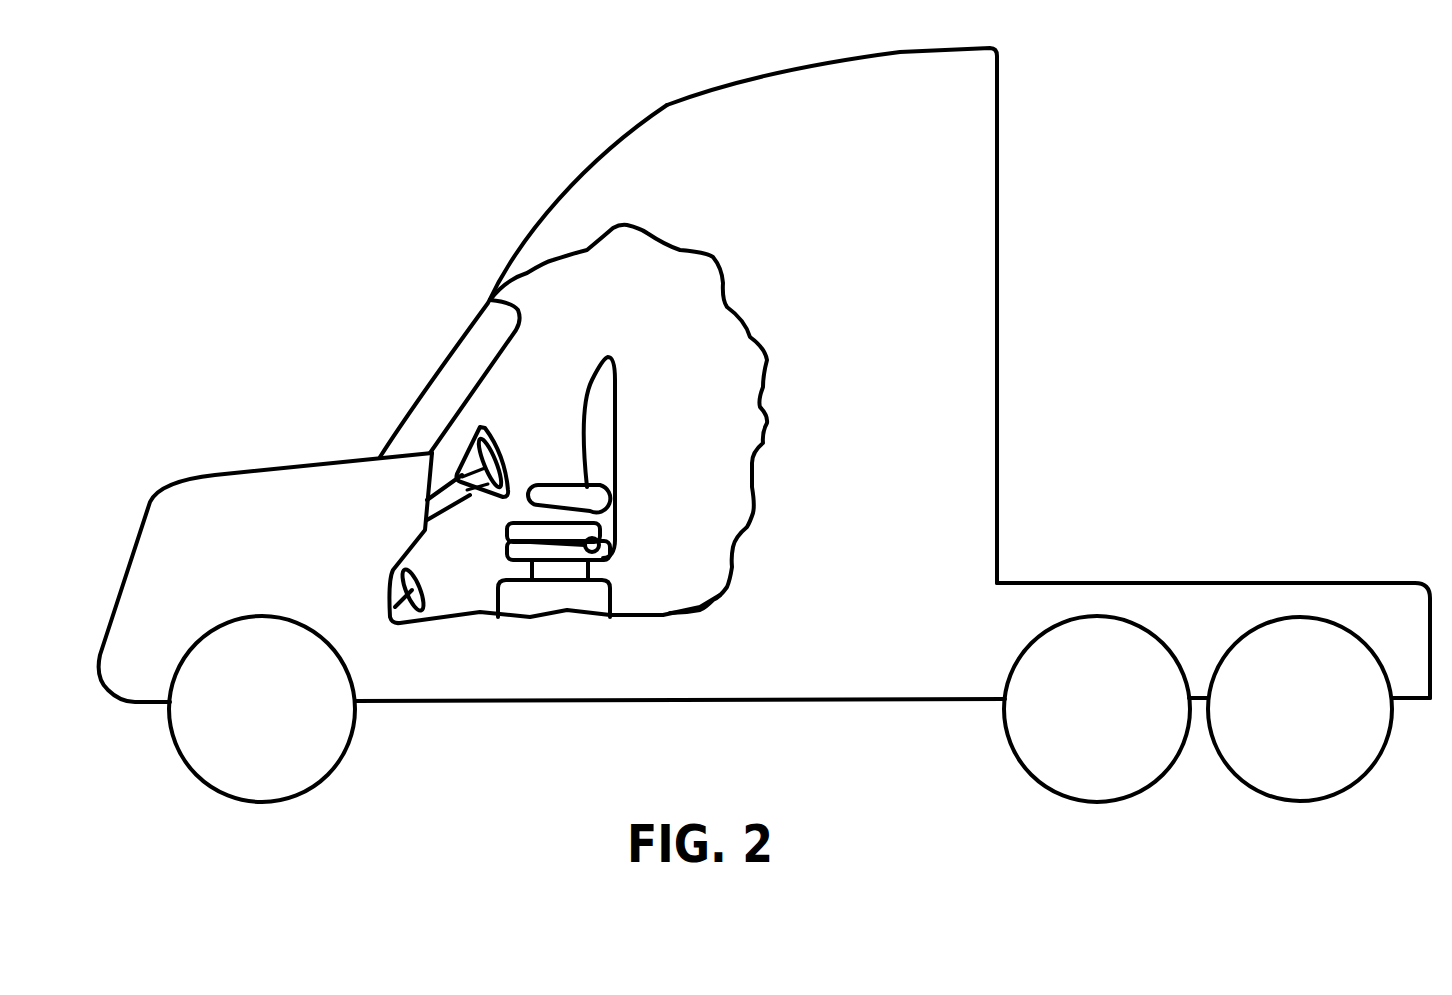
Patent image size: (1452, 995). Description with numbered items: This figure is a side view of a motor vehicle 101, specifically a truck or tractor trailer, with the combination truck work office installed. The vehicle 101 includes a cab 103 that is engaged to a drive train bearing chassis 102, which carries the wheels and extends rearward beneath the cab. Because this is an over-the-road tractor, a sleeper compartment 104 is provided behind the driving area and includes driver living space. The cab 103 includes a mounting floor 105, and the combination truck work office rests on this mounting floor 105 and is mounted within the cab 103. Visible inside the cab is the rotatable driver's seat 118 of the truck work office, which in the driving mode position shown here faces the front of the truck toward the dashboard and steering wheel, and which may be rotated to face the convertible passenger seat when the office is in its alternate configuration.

The motor vehicle 101 is at (997, 347).
The drive train bearing chassis 102 is at (1260, 583).
The cab 103 is at (550, 208).
The sleeper compartment 104 is at (963, 237).
The mounting floor 105 is at (667, 615).
The rotatable driver's seat 118 is at (552, 598).